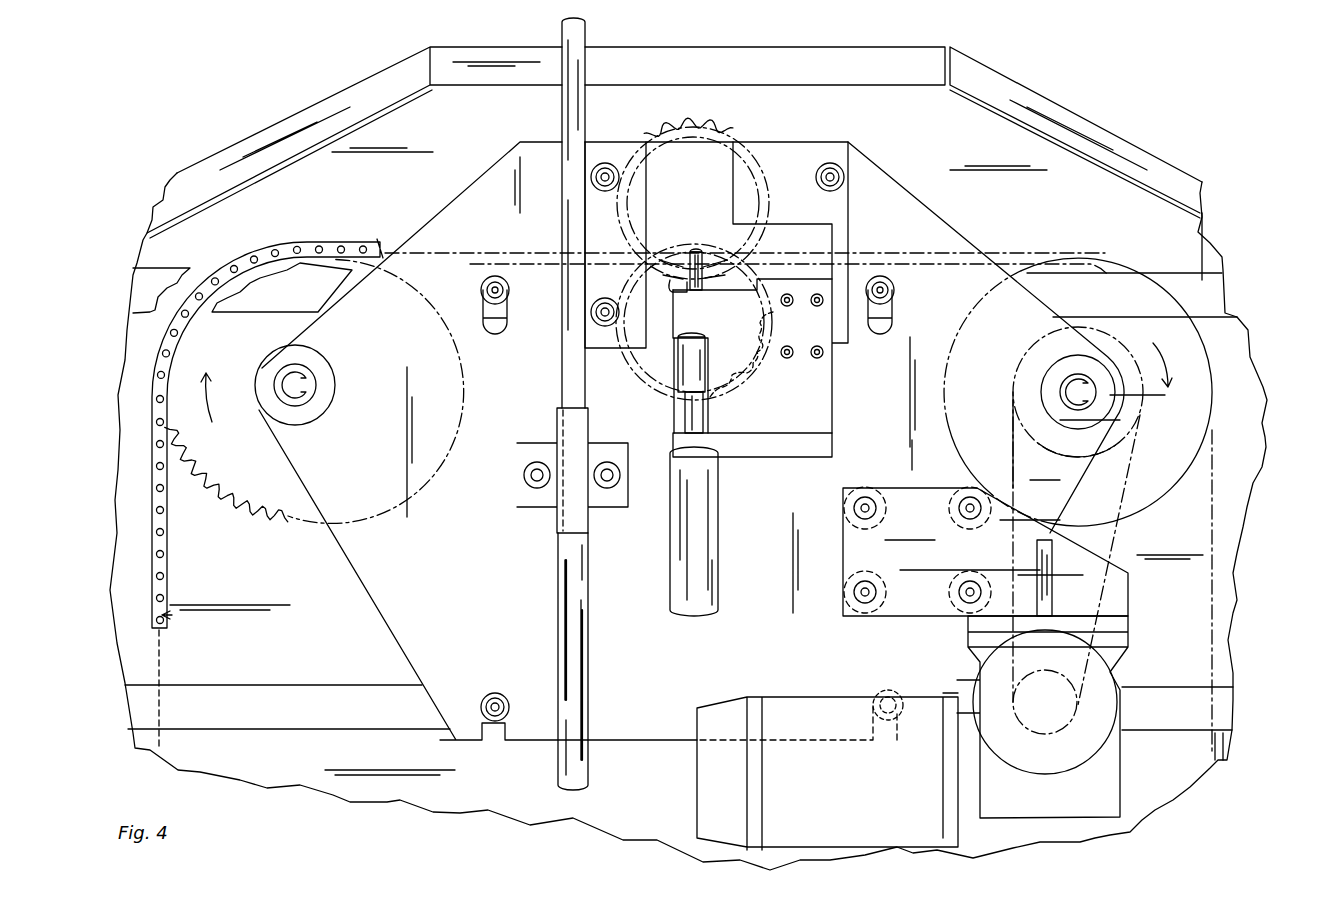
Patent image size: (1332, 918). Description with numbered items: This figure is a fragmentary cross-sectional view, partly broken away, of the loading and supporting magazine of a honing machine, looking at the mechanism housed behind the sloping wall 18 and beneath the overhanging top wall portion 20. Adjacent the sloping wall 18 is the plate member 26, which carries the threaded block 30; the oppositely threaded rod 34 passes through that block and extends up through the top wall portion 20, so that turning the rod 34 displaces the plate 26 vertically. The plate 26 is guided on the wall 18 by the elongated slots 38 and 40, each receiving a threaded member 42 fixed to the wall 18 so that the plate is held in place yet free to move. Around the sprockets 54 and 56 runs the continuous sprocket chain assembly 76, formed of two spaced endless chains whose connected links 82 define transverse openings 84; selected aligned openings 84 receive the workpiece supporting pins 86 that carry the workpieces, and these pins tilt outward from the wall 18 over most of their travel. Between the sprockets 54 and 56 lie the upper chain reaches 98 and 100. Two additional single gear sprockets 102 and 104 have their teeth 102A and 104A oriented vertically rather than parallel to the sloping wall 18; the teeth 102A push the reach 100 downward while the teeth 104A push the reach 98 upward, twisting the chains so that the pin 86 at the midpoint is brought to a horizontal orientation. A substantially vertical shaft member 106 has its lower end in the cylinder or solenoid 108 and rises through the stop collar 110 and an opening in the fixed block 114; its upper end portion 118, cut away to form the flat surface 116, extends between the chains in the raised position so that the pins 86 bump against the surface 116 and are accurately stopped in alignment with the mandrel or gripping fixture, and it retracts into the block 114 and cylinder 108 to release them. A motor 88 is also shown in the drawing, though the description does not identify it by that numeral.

The sloping wall 18 is at (367, 203).
The overhanging top wall portion 20 is at (641, 58).
The plate member 26 is at (410, 588).
The threaded block 30 is at (525, 492).
The rod 34 is at (576, 591).
The elongated slot 38 is at (484, 322).
The elongated slot 40 is at (495, 742).
The threaded member 42 is at (482, 287).
The sprocket 54 is at (298, 506).
The sprocket 56 is at (1185, 403).
The sprocket chain assembly 76 is at (172, 615).
The links 82 is at (225, 433).
The transverse openings 84 is at (170, 590).
The workpiece supporting pins 86 is at (679, 302).
The motor 88 is at (826, 695).
The upper chain reach 98 is at (521, 250).
The upper chain reach 100 is at (521, 270).
The single gear sprocket 102 is at (722, 185).
The teeth 102A is at (700, 122).
The single gear sprocket 104 is at (667, 368).
The teeth 104A is at (774, 372).
The vertical shaft member 106 is at (704, 412).
The cylinder or solenoid 108 is at (698, 492).
The stop collar 110 is at (690, 363).
The fixed block 114 is at (727, 322).
The flat surface 116 is at (690, 255).
The upper end portion 118 is at (700, 258).